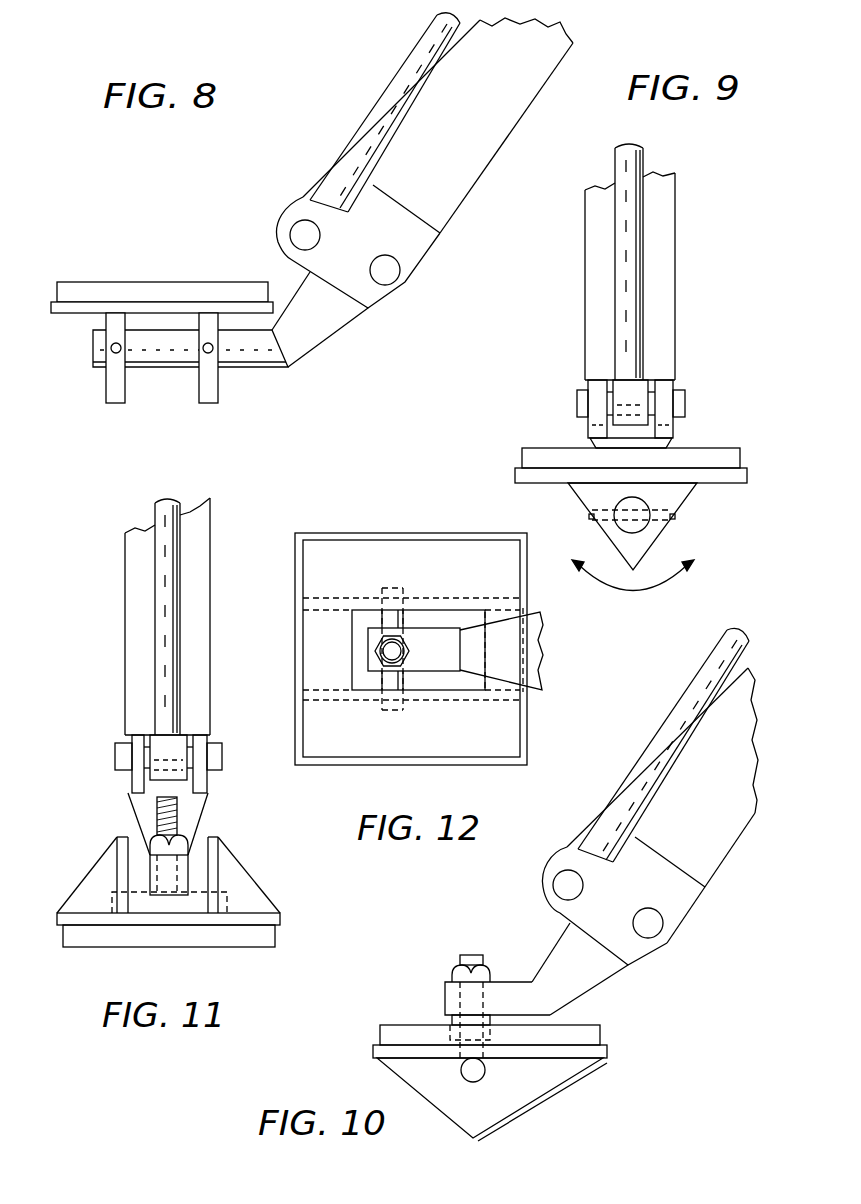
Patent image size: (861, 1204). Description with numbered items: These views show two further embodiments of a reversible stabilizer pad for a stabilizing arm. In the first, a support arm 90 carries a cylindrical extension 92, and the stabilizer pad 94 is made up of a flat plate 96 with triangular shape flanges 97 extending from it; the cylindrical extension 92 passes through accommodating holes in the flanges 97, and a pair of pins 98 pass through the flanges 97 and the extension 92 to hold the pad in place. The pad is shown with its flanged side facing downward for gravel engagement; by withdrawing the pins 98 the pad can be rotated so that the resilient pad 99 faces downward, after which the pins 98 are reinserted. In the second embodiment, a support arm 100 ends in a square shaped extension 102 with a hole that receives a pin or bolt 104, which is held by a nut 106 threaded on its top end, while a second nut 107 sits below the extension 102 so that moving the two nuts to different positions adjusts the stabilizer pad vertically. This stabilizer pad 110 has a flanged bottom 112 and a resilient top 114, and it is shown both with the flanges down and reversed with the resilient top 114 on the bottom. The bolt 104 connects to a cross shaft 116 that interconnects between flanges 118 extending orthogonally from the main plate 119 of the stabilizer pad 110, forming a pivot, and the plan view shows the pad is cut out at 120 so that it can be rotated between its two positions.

In FIG. 8, the support arm 90 is at (455, 177).
In FIG. 9, the support arm 90 is at (590, 330).
In FIG. 8, the cylindrical extension 92 is at (245, 370).
In FIG. 9, the cylindrical extension 92 is at (640, 530).
In FIG. 8, the stabilizer pad 94 is at (165, 272).
In FIG. 9, the stabilizer pad 94 is at (555, 448).
In FIG. 8, the flat plate 96 is at (84, 310).
In FIG. 9, the flat plate 96 is at (631, 475).
In FIG. 8, the triangular shape flanges 97 is at (113, 405).
In FIG. 9, the triangular shape flanges 97 is at (590, 492).
In FIG. 8, the pins 98 is at (207, 354).
In FIG. 9, the pins 98 is at (676, 518).
In FIG. 8, the resilient pad 99 is at (200, 292).
In FIG. 9, the resilient pad 99 is at (631, 458).
In FIG. 10, the support arm 100 is at (710, 850).
In FIG. 12, the square shaped extension 102 is at (435, 626).
In FIG. 11, the square shaped extension 102 is at (182, 870).
In FIG. 10, the square shaped extension 102 is at (518, 992).
In FIG. 12, the pin or bolt 104 is at (388, 651).
In FIG. 11, the pin or bolt 104 is at (157, 818).
In FIG. 10, the pin or bolt 104 is at (468, 953).
In FIG. 12, the nut 106 is at (398, 658).
In FIG. 11, the nut 106 is at (188, 833).
In FIG. 10, the nut 106 is at (460, 972).
In FIG. 10, the second nut 107 is at (453, 1037).
In FIG. 12, the stabilizer pad 110 is at (365, 525).
In FIG. 11, the stabilizer pad 110 is at (197, 653).
In FIG. 10, the stabilizer pad 110 is at (583, 1094).
In FIG. 10, the flanged bottom 112 is at (483, 1113).
In FIG. 11, the resilient top 114 is at (235, 940).
In FIG. 10, the resilient top 114 is at (390, 1020).
In FIG. 12, the cross shaft 116 is at (382, 676).
In FIG. 11, the cross shaft 116 is at (147, 910).
In FIG. 10, the cross shaft 116 is at (478, 1073).
In FIG. 11, the flanges 118 is at (122, 873).
In FIG. 11, the main plate 119 is at (100, 928).
In FIG. 12, the cut-out 120 is at (455, 682).